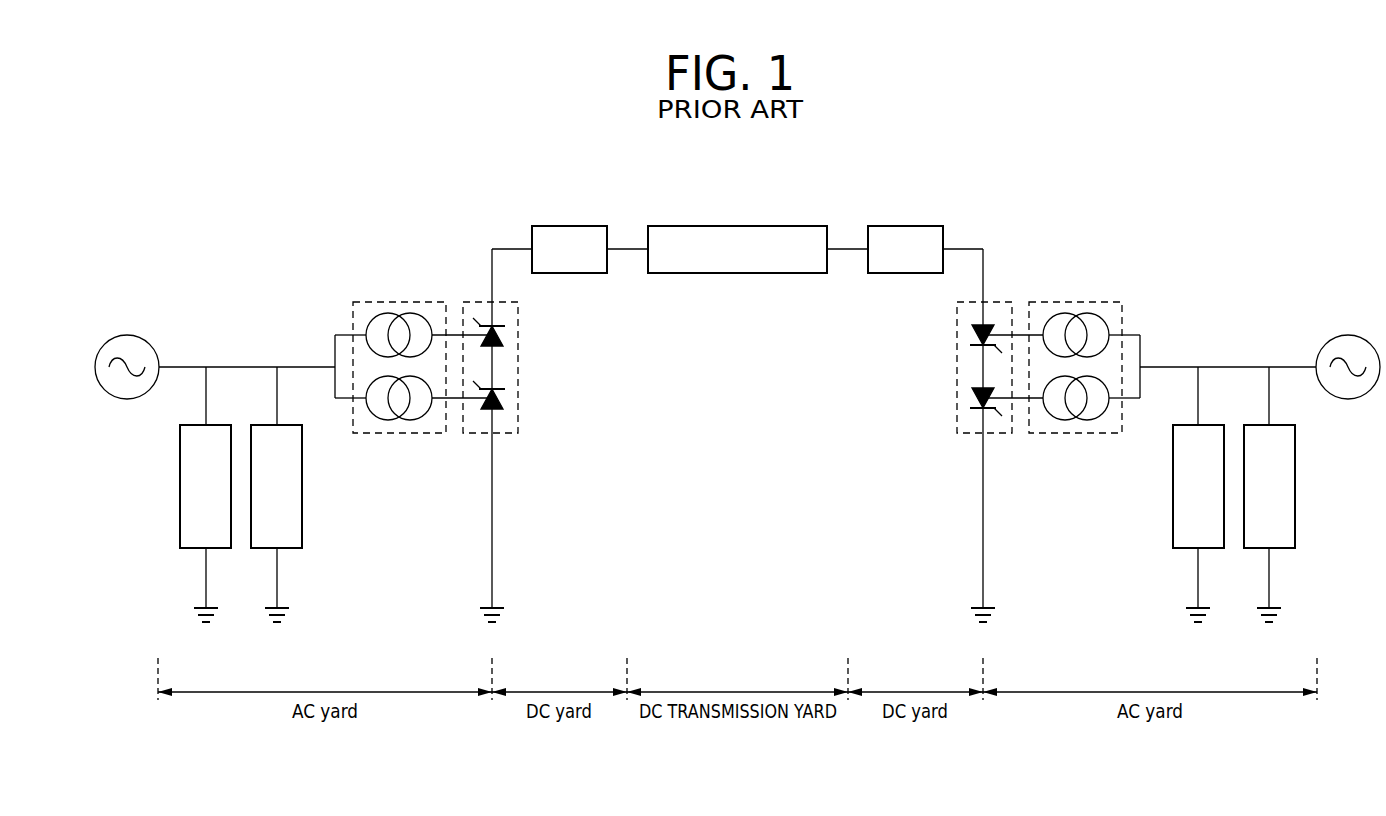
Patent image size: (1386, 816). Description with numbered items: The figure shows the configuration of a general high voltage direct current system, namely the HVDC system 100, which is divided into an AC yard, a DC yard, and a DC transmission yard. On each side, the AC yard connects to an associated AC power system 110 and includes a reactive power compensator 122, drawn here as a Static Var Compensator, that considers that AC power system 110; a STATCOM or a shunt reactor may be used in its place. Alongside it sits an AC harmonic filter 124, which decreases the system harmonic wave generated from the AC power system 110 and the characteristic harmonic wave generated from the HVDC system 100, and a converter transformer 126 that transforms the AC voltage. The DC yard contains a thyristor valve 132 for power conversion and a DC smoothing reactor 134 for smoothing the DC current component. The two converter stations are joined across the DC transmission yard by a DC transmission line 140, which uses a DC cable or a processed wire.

The HVDC system 100 is at (1272, 212).
The AC power system 110 is at (125, 400).
The reactive power compensator 122 is at (180, 486).
The AC harmonic filter 124 is at (302, 486).
The converter transformer 126 is at (407, 434).
The thyristor valve 132 is at (477, 434).
The DC smoothing reactor 134 is at (564, 226).
The DC transmission line 140 is at (738, 226).